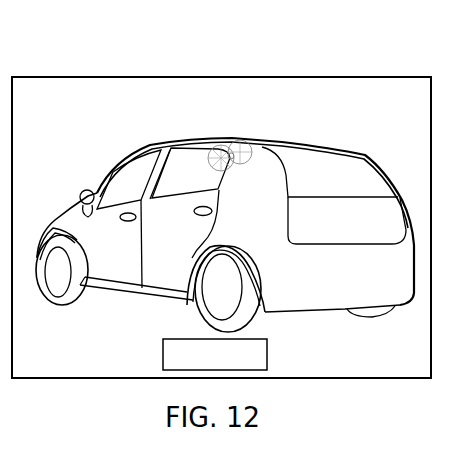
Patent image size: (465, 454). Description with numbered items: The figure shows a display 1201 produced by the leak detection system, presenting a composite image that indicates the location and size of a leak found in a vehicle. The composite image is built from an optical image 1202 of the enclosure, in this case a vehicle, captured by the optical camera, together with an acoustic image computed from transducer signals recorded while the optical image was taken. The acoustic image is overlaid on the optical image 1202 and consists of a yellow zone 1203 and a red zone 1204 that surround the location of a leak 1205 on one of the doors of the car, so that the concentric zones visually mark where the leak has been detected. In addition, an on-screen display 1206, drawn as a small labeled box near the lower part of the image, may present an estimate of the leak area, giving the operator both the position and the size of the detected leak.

The display 1201 is at (18, 77).
The optical image 1202 is at (68, 225).
The yellow zone 1203 is at (238, 140).
The red zone 1204 is at (240, 160).
The leak 1205 is at (212, 165).
The on-screen display 1206 is at (269, 352).